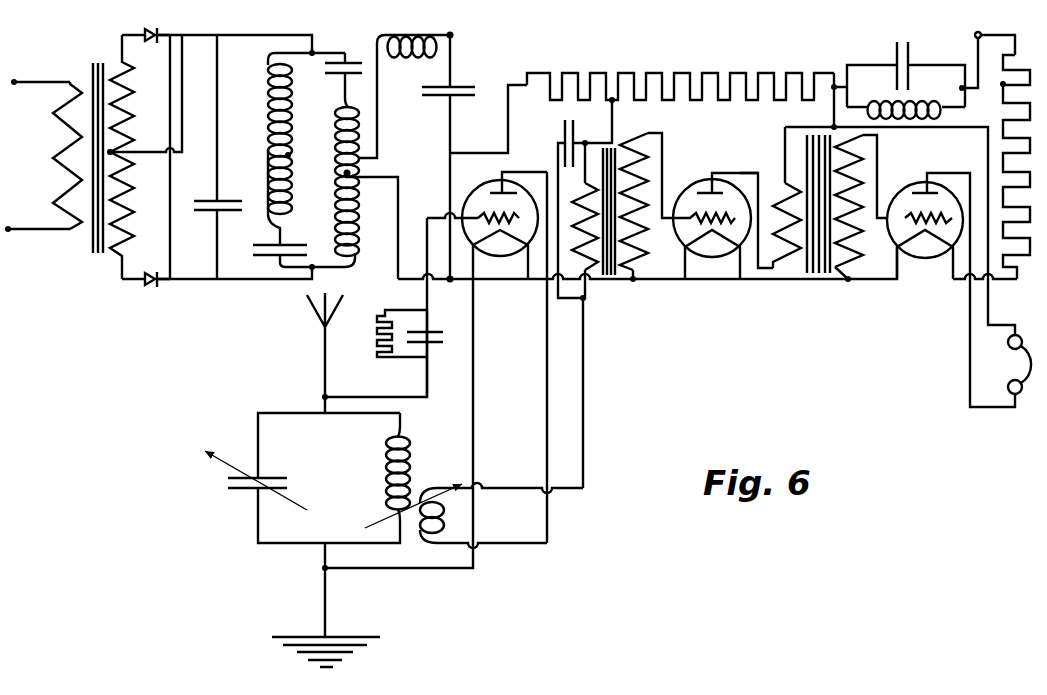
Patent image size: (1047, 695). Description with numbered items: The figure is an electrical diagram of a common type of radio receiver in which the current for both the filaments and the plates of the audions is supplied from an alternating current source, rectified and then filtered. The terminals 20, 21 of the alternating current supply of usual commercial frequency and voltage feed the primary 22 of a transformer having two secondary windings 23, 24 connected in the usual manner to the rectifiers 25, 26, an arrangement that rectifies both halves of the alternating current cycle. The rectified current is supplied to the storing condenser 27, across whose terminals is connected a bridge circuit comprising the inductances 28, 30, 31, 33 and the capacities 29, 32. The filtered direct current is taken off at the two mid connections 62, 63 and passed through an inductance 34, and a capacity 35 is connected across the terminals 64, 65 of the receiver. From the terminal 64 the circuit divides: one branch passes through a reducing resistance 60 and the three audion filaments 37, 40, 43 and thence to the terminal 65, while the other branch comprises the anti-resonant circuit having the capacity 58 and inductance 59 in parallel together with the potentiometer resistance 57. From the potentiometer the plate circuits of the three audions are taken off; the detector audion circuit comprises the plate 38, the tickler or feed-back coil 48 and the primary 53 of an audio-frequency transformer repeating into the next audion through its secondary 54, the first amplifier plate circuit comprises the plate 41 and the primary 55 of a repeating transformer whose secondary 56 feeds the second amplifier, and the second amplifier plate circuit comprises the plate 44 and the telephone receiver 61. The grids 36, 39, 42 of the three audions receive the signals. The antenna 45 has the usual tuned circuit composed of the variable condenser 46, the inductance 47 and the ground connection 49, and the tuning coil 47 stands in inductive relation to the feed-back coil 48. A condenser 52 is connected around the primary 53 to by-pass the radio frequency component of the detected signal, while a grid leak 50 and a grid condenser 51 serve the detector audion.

The terminal 20 is at (36, 73).
The terminal 21 is at (32, 221).
The primary 22 is at (62, 166).
The secondary winding 23 is at (136, 129).
The secondary winding 24 is at (133, 199).
The rectifier 25 is at (160, 33).
The rectifier 26 is at (160, 283).
The storing condenser 27 is at (245, 181).
The inductance 28 is at (281, 155).
The capacity 29 is at (370, 58).
The inductance 30 is at (358, 118).
The inductance 31 is at (283, 211).
The capacity 32 is at (330, 249).
The inductance 33 is at (383, 245).
The inductance 34 is at (410, 25).
The capacity 35 is at (490, 76).
The grid 36 is at (487, 214).
The audion filament 37 is at (502, 234).
The plate 38 is at (540, 166).
The grid 39 is at (702, 212).
The audion filament 40 is at (711, 241).
The plate 41 is at (760, 162).
The grid 42 is at (912, 212).
The audion filament 43 is at (922, 241).
The plate 44 is at (975, 171).
The antenna 45 is at (316, 315).
The variable condenser 46 is at (305, 462).
The inductance 47 is at (383, 490).
The feed-back coil 48 is at (466, 522).
The ground connection 49 is at (380, 622).
The grid leak 50 is at (376, 341).
The grid condenser 51 is at (450, 339).
The condenser 52 is at (563, 137).
The primary 53 is at (594, 262).
The secondary 54 is at (639, 261).
The primary 55 is at (792, 256).
The secondary 56 is at (858, 261).
The potentiometer resistance 57 is at (641, 72).
The capacity 58 is at (896, 58).
The inductance 59 is at (904, 100).
The reducing resistance 60 is at (1001, 81).
The telephone receiver 61 is at (1010, 380).
The mid connection 62 is at (350, 173).
The mid connection 63 is at (290, 157).
The terminal 64 is at (452, 34).
The terminal 65 is at (448, 278).